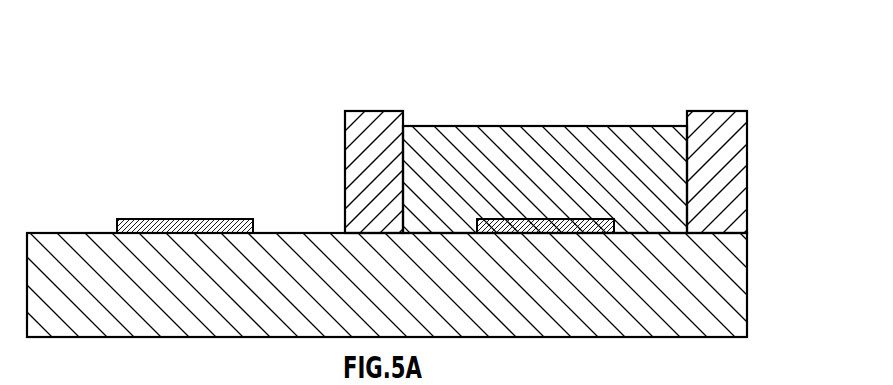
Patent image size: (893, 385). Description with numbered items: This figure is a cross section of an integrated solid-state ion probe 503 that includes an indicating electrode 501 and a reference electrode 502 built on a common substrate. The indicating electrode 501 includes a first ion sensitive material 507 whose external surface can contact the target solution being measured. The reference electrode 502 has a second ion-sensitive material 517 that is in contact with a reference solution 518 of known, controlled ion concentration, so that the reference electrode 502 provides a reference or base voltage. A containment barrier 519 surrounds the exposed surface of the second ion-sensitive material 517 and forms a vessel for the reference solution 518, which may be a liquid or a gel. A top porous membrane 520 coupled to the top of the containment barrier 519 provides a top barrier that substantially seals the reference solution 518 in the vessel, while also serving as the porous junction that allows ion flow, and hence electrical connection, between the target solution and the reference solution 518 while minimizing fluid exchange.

The indicating electrode 501 is at (146, 155).
The reference electrode 502 is at (609, 106).
The integrated solid-state ion probe 503 is at (162, 39).
The first ion sensitive material 507 is at (181, 219).
The second ion-sensitive material 517 is at (505, 218).
The reference solution 518 is at (485, 136).
The containment barrier 519 is at (383, 111).
The top porous membrane 520 is at (439, 124).